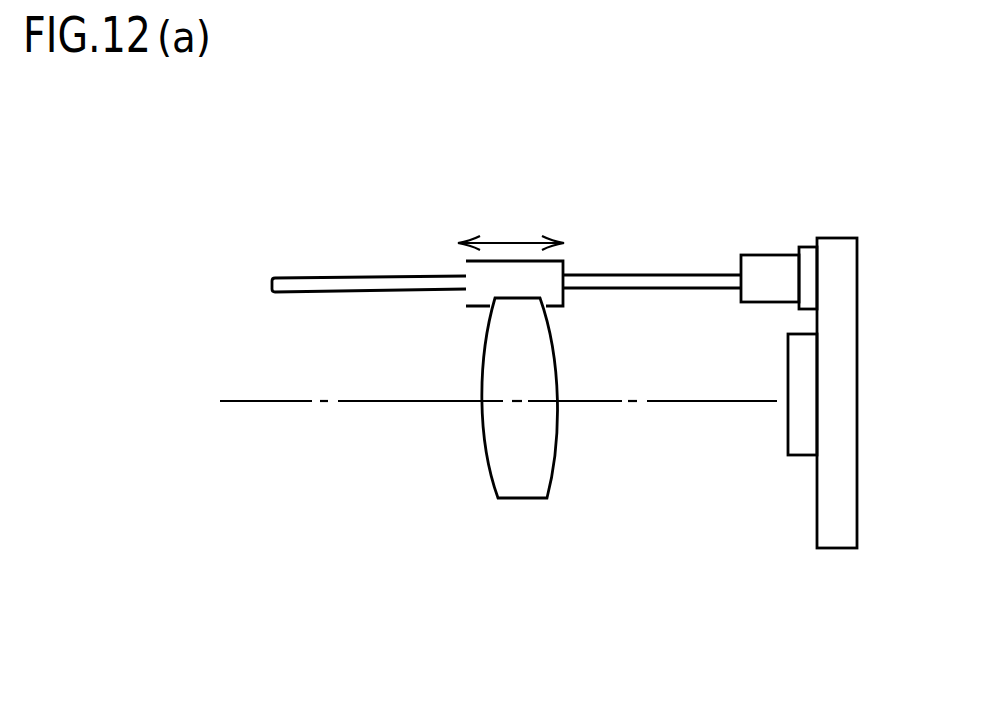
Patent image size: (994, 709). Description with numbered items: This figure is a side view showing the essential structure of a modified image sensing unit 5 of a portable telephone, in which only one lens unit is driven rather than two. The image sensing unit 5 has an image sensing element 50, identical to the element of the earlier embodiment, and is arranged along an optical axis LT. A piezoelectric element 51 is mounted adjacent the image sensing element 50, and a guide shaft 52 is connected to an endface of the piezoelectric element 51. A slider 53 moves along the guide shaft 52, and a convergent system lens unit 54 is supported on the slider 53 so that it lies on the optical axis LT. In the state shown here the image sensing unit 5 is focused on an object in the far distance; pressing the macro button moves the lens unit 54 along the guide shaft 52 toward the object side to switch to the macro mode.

The image sensing unit 5 is at (318, 228).
The image sensing element 50 is at (799, 457).
The piezoelectric element 51 is at (770, 256).
The guide shaft 52 is at (373, 276).
The slider 53 is at (563, 260).
The convergent system lens unit 54 is at (555, 462).
The optical axis LT is at (263, 402).